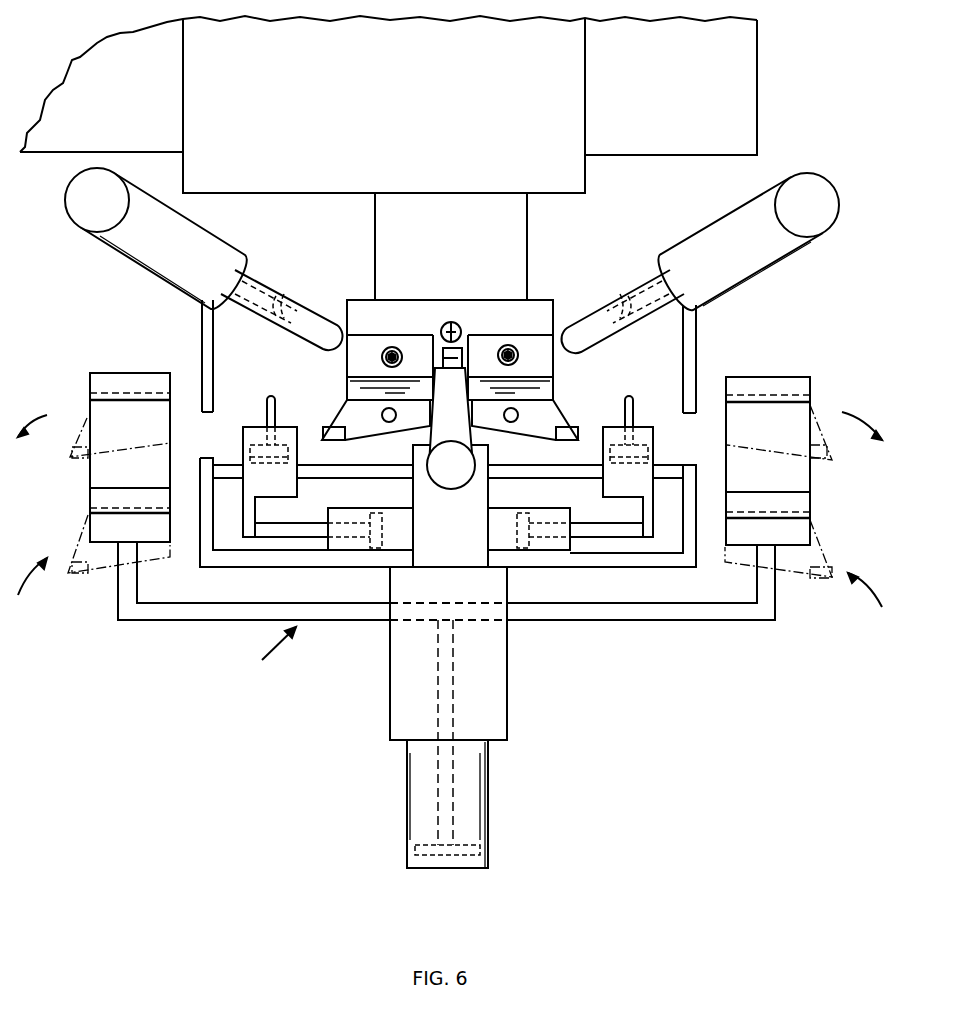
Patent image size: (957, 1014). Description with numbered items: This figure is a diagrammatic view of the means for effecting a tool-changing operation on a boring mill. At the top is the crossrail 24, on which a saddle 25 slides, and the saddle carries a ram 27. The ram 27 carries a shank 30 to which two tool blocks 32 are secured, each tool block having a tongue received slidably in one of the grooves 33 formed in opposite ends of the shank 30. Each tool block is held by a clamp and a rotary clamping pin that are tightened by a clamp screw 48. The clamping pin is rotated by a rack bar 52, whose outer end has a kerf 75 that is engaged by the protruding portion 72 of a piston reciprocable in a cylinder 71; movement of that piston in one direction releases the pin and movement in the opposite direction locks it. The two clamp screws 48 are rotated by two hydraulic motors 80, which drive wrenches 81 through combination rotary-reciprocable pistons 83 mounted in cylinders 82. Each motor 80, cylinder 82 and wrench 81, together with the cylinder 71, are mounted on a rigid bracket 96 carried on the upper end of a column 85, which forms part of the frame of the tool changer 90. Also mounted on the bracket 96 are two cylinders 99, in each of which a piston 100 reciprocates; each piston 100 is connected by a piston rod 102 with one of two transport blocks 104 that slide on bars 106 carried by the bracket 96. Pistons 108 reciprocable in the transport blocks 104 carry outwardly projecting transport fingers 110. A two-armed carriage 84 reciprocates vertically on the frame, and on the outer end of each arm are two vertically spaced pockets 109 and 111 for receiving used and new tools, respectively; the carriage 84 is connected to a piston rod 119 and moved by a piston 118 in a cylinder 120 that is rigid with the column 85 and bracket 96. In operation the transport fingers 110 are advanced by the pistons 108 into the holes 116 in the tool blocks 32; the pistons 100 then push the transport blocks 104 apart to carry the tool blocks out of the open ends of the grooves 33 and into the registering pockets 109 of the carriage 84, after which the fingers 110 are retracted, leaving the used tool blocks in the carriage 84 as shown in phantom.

The crossrail 24 is at (757, 103).
The saddle 25 is at (585, 178).
The ram 27 is at (527, 253).
The shank 30 is at (357, 300).
The tool block 32 is at (342, 405).
The groove 33 is at (327, 430).
The clamp screw 48 is at (392, 348).
The rack bar 52 is at (458, 330).
The cylinder 71 is at (441, 477).
The protruding portion 72 is at (467, 366).
The kerf 75 is at (448, 322).
The hydraulic motor 80 is at (210, 232).
The wrench 81 is at (323, 327).
The cylinder 82 is at (270, 290).
The rotary-reciprocable piston 83 is at (297, 292).
The carriage 84 is at (90, 437).
The column 85 is at (503, 647).
The tool changer 90 is at (267, 649).
The bracket 96 is at (335, 560).
The cylinder 99 is at (405, 533).
The piston 100 is at (378, 513).
The piston rod 102 is at (308, 523).
The transport block 104 is at (242, 438).
The bar 106 is at (347, 467).
The piston 108 is at (250, 460).
The pocket 109 is at (103, 370).
The transport finger 110 is at (268, 403).
The pocket 111 is at (103, 487).
The hole 116 is at (389, 422).
The piston 118 is at (482, 848).
The piston rod 119 is at (453, 705).
The cylinder 120 is at (485, 797).